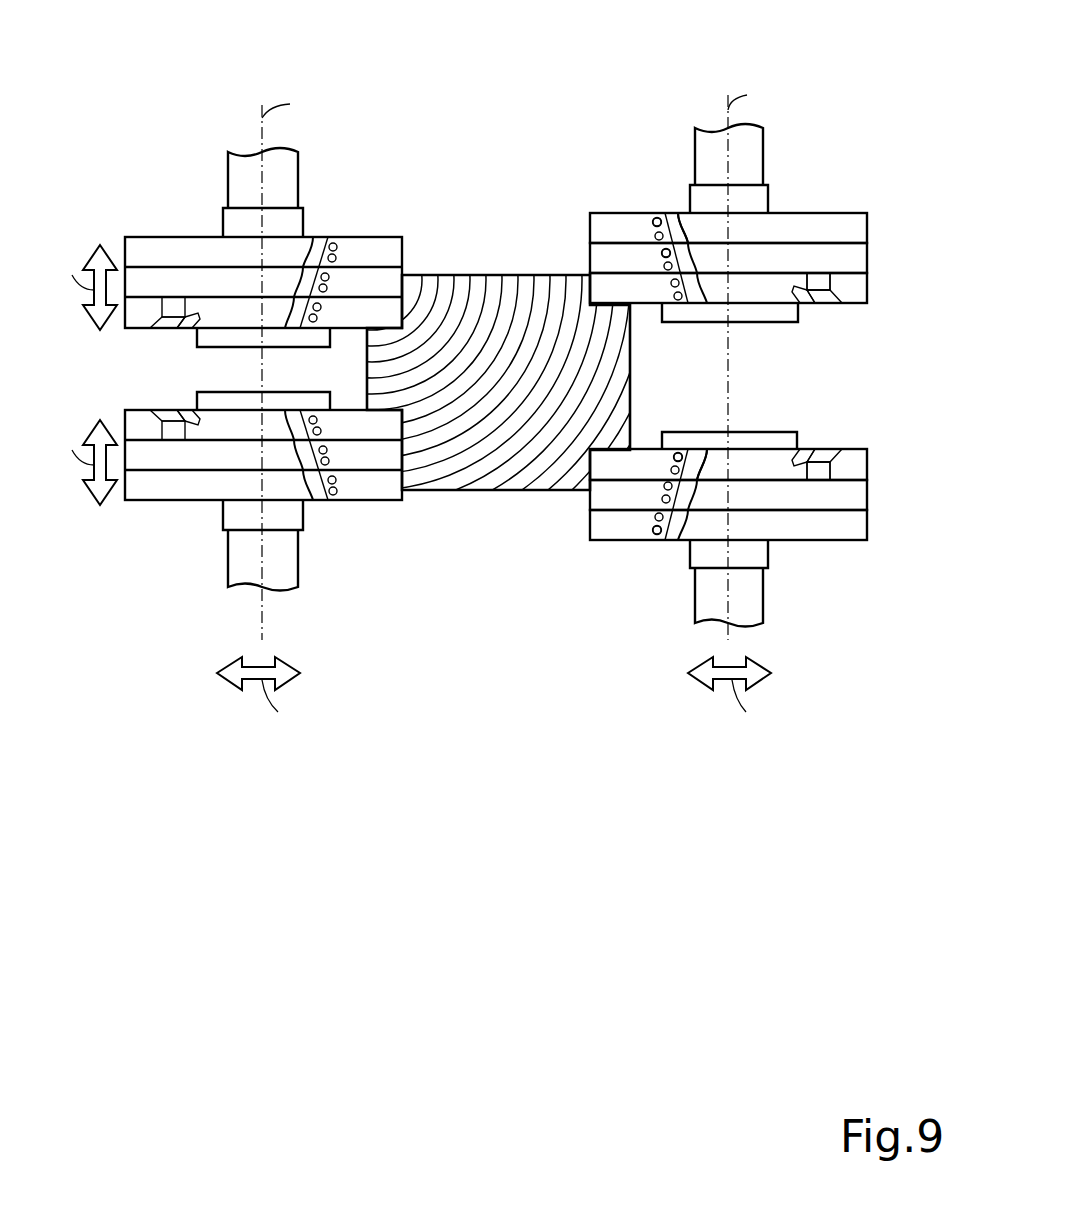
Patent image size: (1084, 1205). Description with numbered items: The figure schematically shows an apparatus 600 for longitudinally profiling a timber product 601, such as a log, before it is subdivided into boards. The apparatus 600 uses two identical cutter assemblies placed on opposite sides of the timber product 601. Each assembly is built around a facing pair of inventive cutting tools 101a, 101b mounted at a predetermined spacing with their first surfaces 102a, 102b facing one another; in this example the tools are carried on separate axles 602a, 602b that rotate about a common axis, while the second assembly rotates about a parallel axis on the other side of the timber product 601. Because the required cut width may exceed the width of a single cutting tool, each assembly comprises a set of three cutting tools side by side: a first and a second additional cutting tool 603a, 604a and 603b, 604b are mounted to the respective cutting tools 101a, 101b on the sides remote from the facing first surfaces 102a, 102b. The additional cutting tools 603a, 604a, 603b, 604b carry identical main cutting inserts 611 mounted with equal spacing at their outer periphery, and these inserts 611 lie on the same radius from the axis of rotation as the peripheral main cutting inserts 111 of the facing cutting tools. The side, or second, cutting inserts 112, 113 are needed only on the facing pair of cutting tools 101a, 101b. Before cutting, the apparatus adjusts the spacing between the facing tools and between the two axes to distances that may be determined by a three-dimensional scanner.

The apparatus 600 is at (579, 88).
The timber product 601 is at (483, 492).
The axle 602a is at (748, 159).
The axle 602b is at (755, 598).
The first additional cutting tool 603a is at (858, 252).
The first additional cutting tool 603b is at (858, 496).
The second additional cutting tool 604a is at (857, 229).
The second additional cutting tool 604b is at (858, 530).
The main cutting inserts 611 is at (688, 262).
The first cutting inserts 111 is at (700, 303).
The second cutting insert 112 is at (827, 303).
The second cutting insert 113 is at (823, 449).
The cutting tool 101a is at (774, 319).
The cutting tool 101b is at (774, 434).
The first surface 102a is at (860, 316).
The first surface 102b is at (860, 437).